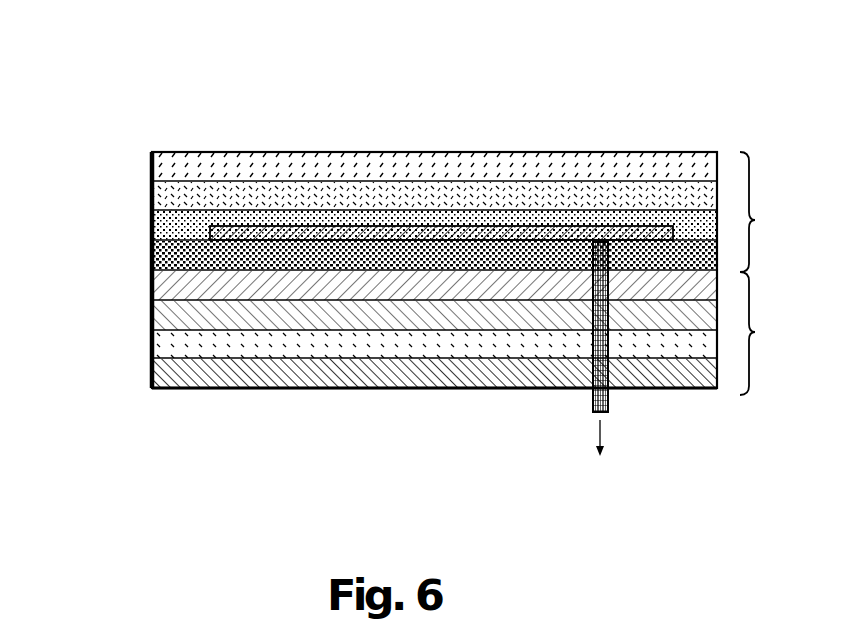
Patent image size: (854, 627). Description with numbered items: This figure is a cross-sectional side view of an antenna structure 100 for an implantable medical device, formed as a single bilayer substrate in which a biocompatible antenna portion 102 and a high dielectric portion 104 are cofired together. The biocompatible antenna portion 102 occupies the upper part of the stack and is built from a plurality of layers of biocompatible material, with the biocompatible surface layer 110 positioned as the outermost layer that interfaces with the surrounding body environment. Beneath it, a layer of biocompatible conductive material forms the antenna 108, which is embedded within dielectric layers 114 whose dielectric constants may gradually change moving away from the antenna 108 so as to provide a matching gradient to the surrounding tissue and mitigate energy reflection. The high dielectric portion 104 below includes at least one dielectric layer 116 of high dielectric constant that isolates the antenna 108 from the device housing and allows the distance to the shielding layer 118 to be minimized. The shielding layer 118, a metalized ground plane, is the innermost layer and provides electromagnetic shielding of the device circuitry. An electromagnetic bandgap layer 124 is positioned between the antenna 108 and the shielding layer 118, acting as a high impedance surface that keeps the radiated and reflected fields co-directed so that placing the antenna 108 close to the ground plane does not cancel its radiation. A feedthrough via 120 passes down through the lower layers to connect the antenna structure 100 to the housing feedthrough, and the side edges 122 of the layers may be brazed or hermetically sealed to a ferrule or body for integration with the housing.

The antenna structure 100 is at (160, 106).
The biocompatible antenna portion 102 is at (769, 212).
The high dielectric portion 104 is at (769, 333).
The antenna 108 is at (357, 226).
The biocompatible surface layer 110 is at (153, 167).
The dielectric layers 114 is at (160, 198).
The dielectric layer 116 is at (165, 290).
The shielding layer 118 is at (155, 378).
The feedthrough via 120 is at (609, 404).
The side edges 122 is at (153, 175).
The electromagnetic bandgap layer 124 is at (155, 343).